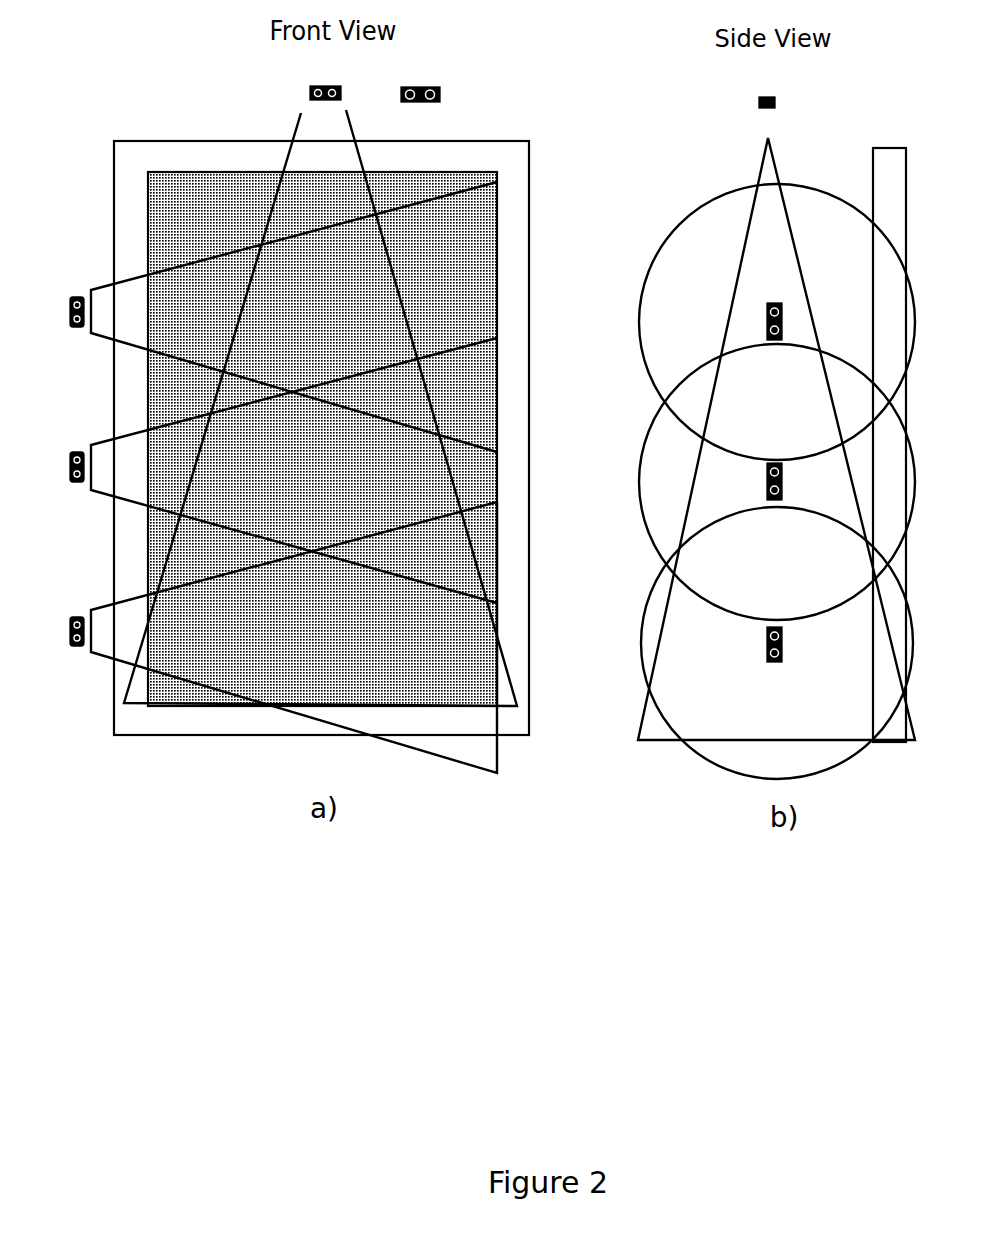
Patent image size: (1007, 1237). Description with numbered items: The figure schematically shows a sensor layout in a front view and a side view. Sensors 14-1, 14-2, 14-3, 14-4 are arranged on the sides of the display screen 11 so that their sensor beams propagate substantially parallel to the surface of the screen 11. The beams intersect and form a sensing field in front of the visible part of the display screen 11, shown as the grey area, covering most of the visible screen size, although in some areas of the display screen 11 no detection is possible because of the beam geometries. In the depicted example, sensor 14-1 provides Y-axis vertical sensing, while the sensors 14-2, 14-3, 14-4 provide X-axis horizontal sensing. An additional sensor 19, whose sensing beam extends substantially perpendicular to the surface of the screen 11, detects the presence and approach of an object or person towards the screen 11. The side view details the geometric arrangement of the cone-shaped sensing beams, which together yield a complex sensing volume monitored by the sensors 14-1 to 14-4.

In FIG. 2a, the display screen 11 is at (321, 438).
In FIG. 2b, the display screen 11 is at (889, 445).
In FIG. 2a, the sensor 14-1 is at (320, 380).
In FIG. 2b, the sensor 14-1 is at (776, 401).
In FIG. 2a, the sensor 14-2 is at (267, 317).
In FIG. 2b, the sensor 14-2 is at (777, 322).
In FIG. 2a, the sensor 14-3 is at (267, 470).
In FIG. 2b, the sensor 14-3 is at (777, 482).
In FIG. 2a, the sensor 14-4 is at (267, 637).
In FIG. 2b, the sensor 14-4 is at (777, 643).
In FIG. 2a, the additional sensor 19 is at (420, 78).